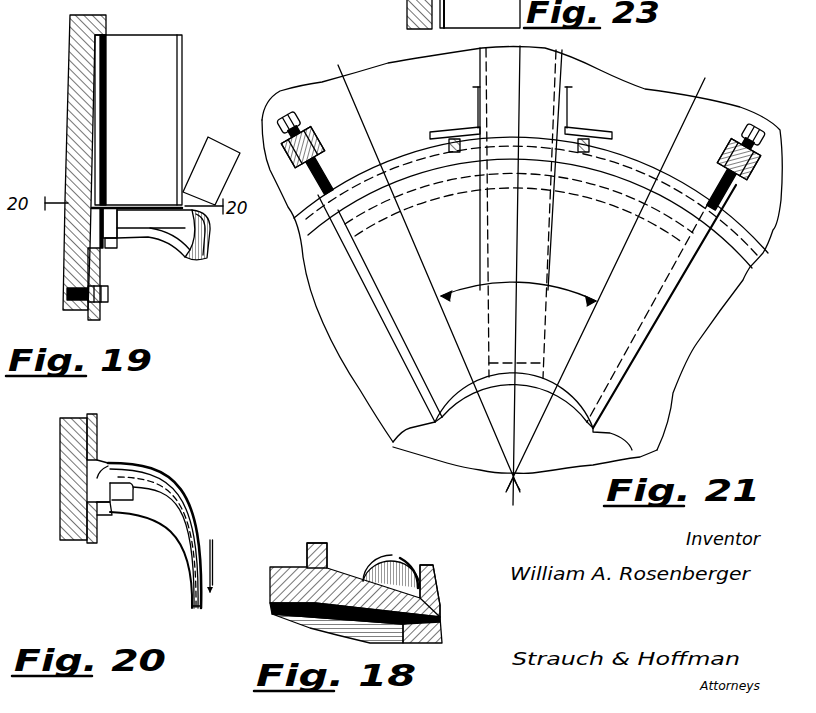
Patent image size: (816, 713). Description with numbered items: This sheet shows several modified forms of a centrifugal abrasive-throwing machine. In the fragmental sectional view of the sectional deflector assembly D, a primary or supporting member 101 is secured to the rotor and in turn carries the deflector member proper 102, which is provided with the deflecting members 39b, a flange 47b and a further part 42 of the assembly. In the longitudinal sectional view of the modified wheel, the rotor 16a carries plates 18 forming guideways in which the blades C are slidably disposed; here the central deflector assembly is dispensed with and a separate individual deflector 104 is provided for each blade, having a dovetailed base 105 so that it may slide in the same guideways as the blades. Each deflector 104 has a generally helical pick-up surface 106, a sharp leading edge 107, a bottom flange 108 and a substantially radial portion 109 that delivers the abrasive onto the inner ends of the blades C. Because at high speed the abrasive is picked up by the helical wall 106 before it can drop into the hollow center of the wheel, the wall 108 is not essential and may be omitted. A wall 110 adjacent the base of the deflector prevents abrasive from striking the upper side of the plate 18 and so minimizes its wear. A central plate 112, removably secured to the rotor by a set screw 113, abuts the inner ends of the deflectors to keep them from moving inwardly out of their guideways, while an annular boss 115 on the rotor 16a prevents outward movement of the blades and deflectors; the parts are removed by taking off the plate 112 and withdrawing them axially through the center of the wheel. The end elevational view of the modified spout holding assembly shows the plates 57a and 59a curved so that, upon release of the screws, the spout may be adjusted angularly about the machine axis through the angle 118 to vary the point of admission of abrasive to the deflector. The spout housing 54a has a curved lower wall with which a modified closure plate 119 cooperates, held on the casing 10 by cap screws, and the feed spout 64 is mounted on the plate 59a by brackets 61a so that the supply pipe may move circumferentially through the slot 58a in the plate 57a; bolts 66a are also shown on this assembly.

In FIG. 21, the housing 10 is at (398, 394).
In FIG. 19, the rotor 16a is at (77, 121).
In FIG. 20, the rotor 16a is at (62, 448).
In FIG. 20, the plates 18 is at (85, 543).
In FIG. 18, the deflecting members 39b is at (436, 579).
In FIG. 18, the button 42 is at (413, 560).
In FIG. 18, the flange 47b is at (325, 556).
In FIG. 21, the spout housing 54a is at (400, 338).
In FIG. 21, the plate 57a is at (623, 173).
In FIG. 21, the slot 58a is at (350, 190).
In FIG. 21, the plate 59a is at (410, 150).
In FIG. 21, the brackets 61a is at (462, 128).
In FIG. 21, the feed spout 64 is at (481, 62).
In FIG. 21, the bolt 66a is at (290, 118).
In FIG. 18, the primary or supporting member 101 is at (320, 622).
In FIG. 18, the deflector member proper 102 is at (364, 571).
In FIG. 20, the individual deflector 104 is at (176, 493).
In FIG. 20, the dovetailed base 105 is at (96, 466).
In FIG. 19, the helical pick-up surface 106 is at (188, 232).
In FIG. 20, the helical pick-up surface 106 is at (193, 512).
In FIG. 20, the sharp leading edge 107 is at (197, 607).
In FIG. 19, the bottom flange 108 is at (150, 242).
In FIG. 20, the bottom flange 108 is at (168, 528).
In FIG. 19, the radial portion 109 is at (132, 222).
In FIG. 20, the radial portion 109 is at (130, 484).
In FIG. 19, the wall 110 is at (113, 246).
In FIG. 20, the wall 110 is at (112, 513).
In FIG. 19, the central plate 112 is at (100, 316).
In FIG. 19, the set screw 113 is at (108, 296).
In FIG. 19, the annular boss 115 is at (103, 32).
In FIG. 21, the angle 118 is at (592, 300).
In FIG. 21, the closure plate 119 is at (393, 443).
In FIG. 19, the blades C is at (183, 115).
In FIG. 19, the deflector assembly D is at (222, 146).
In FIG. 18, the deflector assembly D is at (272, 565).